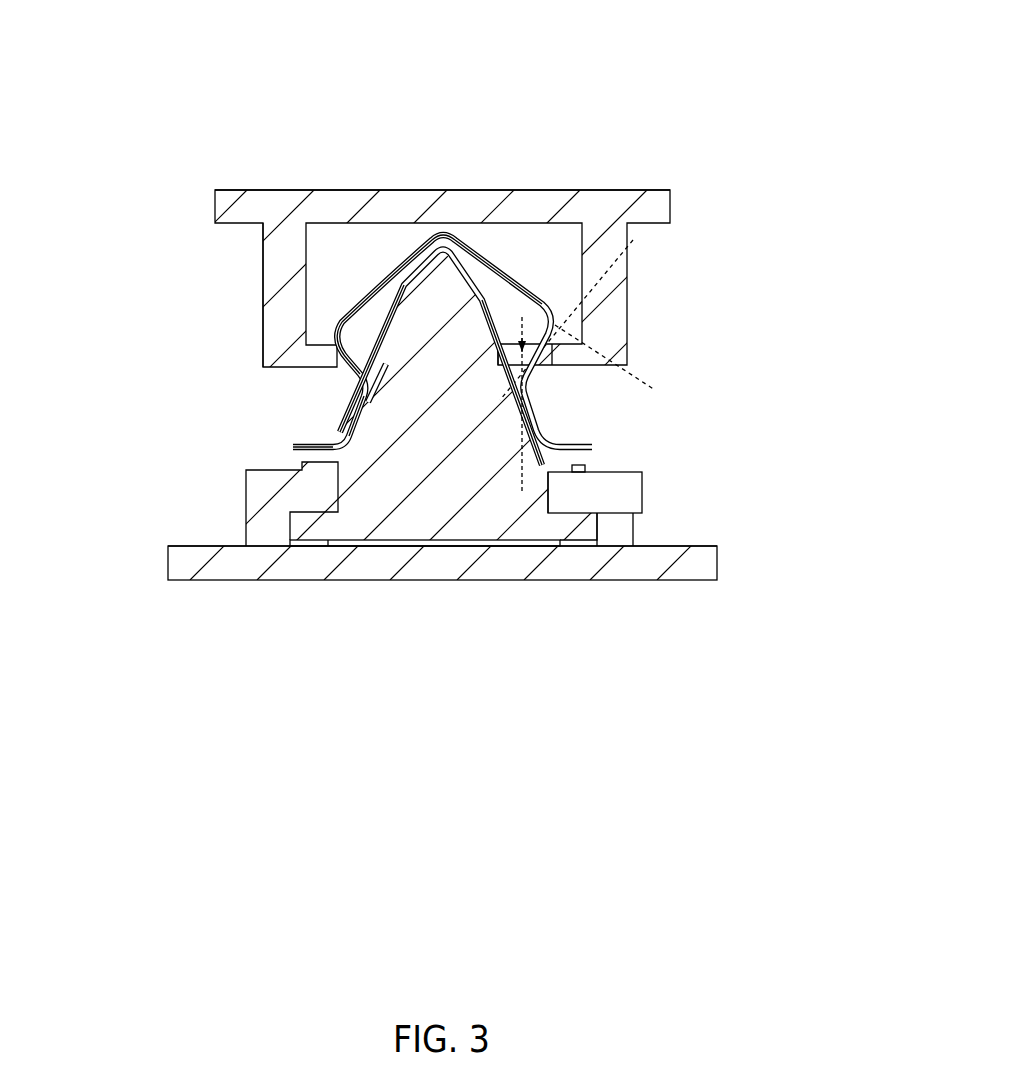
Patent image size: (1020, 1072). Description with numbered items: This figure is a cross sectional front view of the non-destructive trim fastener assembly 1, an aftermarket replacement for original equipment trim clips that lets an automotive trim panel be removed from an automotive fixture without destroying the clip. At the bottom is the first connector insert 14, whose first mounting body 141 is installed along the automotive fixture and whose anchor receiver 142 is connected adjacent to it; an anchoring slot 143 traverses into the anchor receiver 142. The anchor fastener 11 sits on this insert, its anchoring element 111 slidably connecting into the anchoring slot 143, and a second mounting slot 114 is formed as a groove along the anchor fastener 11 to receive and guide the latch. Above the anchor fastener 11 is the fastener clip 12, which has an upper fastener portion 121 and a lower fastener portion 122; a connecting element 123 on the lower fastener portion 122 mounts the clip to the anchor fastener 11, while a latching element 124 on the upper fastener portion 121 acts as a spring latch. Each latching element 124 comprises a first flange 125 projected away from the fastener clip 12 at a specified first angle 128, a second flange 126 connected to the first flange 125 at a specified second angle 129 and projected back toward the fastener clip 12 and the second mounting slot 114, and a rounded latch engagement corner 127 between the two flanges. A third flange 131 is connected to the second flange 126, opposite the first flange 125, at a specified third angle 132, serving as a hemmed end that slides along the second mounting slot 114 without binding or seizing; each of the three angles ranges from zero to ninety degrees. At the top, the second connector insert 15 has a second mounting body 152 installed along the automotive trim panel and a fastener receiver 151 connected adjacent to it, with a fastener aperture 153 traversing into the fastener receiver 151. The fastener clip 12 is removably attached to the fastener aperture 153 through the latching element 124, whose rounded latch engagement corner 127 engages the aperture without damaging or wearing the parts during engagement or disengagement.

The non-destructive trim fastener assembly 1 is at (453, 93).
The anchor fastener 11 is at (591, 461).
The anchoring element 111 is at (608, 526).
The second mounting slot 114 is at (531, 418).
The fastener clip 12 is at (552, 396).
The upper fastener portion 121 is at (420, 236).
The lower fastener portion 122 is at (291, 446).
The connecting element 123 is at (346, 458).
The latching element 124 is at (528, 289).
The first flange 125 is at (361, 297).
The second flange 126 is at (346, 364).
The latch engagement corner 127 is at (331, 327).
The specified first angle 128 is at (651, 377).
The specified second angle 129 is at (637, 240).
The third flange 131 is at (361, 406).
The specified third angle 132 is at (521, 498).
The first connector insert 14 is at (738, 557).
The first mounting body 141 is at (234, 584).
The anchor receiver 142 is at (244, 500).
The anchoring slot 143 is at (633, 538).
The second connector insert 15 is at (688, 178).
The fastener receiver 151 is at (260, 280).
The second mounting body 152 is at (546, 187).
The fastener aperture 153 is at (532, 345).